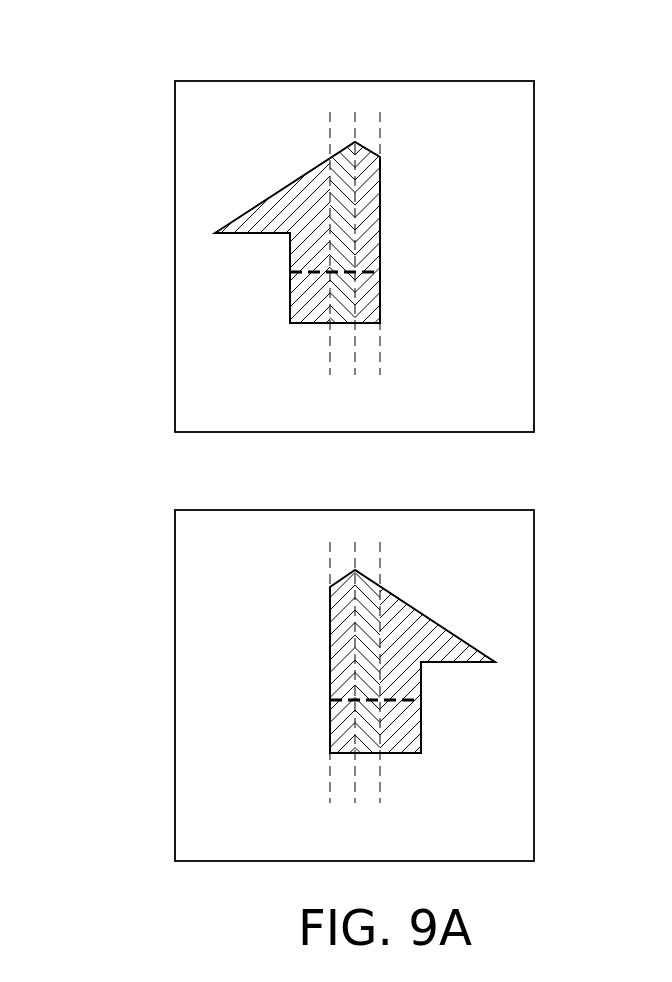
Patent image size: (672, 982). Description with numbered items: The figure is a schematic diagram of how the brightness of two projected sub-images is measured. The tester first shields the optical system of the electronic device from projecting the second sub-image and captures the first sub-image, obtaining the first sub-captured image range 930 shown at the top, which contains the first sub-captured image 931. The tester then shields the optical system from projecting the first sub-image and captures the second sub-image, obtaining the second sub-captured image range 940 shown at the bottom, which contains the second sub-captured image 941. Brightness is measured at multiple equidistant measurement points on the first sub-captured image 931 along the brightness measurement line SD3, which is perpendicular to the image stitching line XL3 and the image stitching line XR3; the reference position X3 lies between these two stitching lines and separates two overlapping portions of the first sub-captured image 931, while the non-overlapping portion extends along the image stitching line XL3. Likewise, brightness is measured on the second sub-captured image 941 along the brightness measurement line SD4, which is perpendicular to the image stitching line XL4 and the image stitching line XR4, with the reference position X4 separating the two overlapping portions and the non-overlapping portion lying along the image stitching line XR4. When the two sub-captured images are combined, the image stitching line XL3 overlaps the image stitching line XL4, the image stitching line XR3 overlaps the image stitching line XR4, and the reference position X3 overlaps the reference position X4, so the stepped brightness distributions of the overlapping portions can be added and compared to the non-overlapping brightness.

The first sub-captured image range 930 is at (203, 80).
The first sub-captured image 931 is at (299, 183).
The brightness measurement line SD3 is at (367, 264).
The reference position X3 is at (355, 253).
The image stitching line XL3 is at (322, 265).
The image stitching line XR3 is at (389, 265).
The second sub-captured image range 940 is at (202, 508).
The second sub-captured image 941 is at (432, 646).
The brightness measurement line SD4 is at (402, 714).
The reference position X4 is at (355, 682).
The image stitching line XL4 is at (326, 694).
The image stitching line XR4 is at (385, 694).